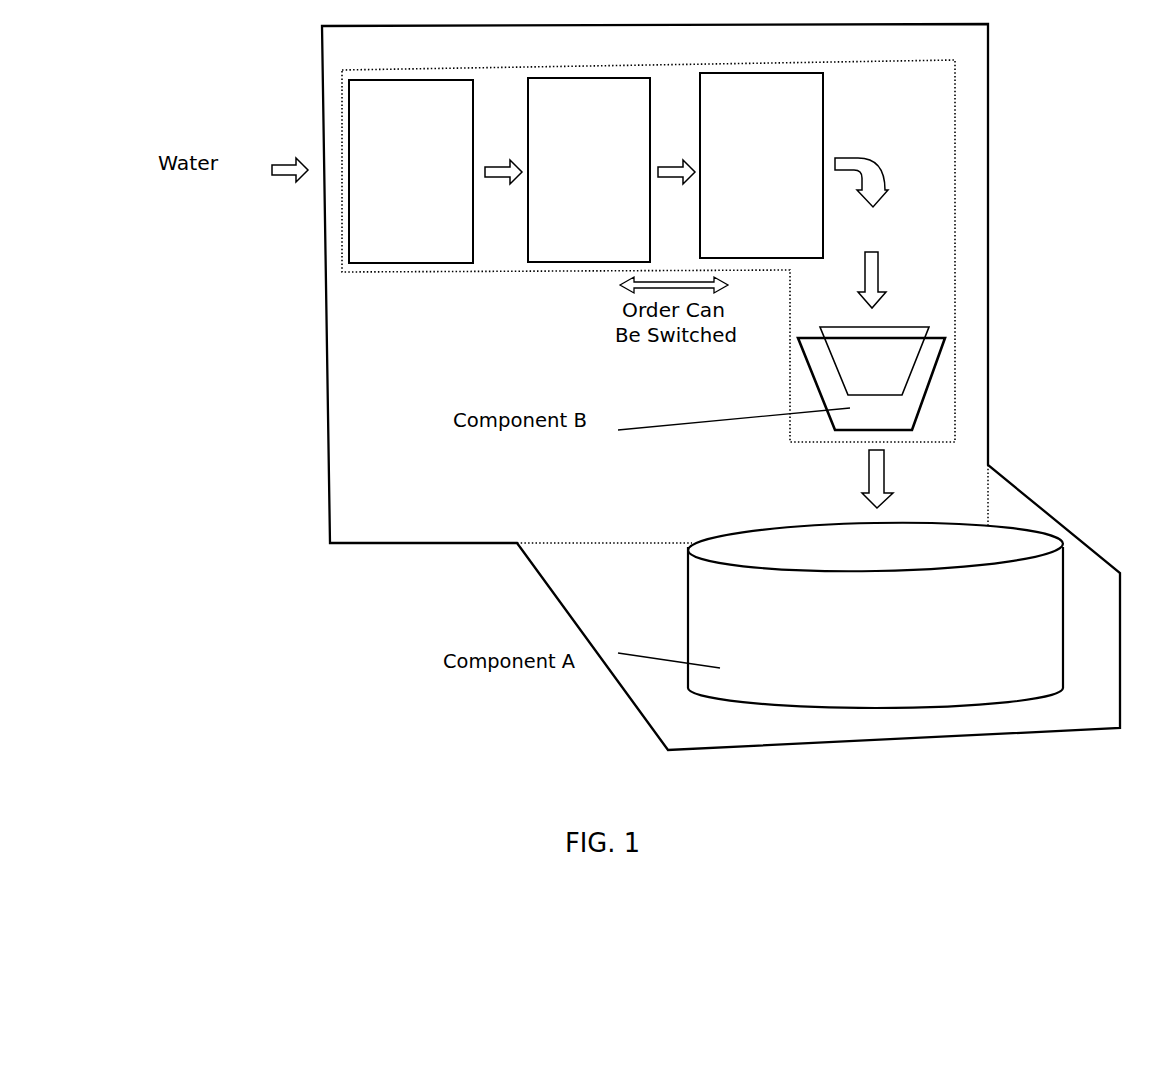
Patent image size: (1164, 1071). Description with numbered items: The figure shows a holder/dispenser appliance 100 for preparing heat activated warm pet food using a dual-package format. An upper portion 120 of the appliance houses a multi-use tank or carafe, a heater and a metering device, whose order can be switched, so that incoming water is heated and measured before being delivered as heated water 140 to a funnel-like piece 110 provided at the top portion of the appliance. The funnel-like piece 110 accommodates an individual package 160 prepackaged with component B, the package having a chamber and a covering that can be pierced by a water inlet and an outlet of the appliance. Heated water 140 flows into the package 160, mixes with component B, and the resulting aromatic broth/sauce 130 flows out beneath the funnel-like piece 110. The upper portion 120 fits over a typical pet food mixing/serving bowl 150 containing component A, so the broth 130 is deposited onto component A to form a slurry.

The holder/dispenser appliance 100 is at (958, 228).
The upper portion 120 is at (502, 272).
The heated water 140 is at (880, 280).
The individual package 160 is at (903, 334).
The funnel-like piece 110 is at (930, 386).
The aromatic broth/sauce 130 is at (890, 475).
The pet food mixing/serving bowl 150 is at (1069, 636).